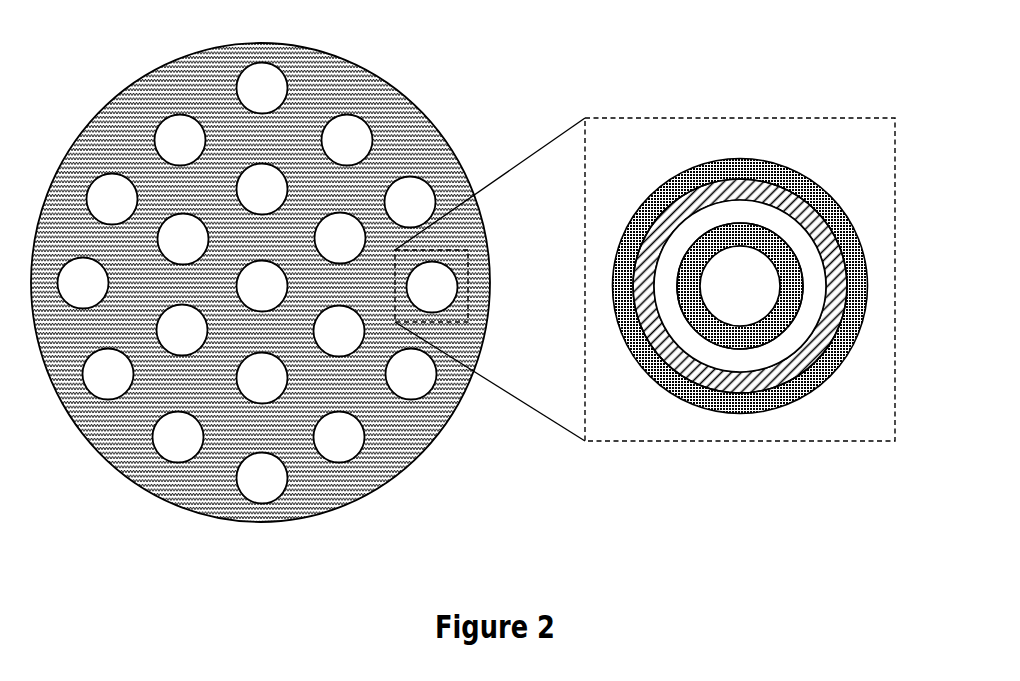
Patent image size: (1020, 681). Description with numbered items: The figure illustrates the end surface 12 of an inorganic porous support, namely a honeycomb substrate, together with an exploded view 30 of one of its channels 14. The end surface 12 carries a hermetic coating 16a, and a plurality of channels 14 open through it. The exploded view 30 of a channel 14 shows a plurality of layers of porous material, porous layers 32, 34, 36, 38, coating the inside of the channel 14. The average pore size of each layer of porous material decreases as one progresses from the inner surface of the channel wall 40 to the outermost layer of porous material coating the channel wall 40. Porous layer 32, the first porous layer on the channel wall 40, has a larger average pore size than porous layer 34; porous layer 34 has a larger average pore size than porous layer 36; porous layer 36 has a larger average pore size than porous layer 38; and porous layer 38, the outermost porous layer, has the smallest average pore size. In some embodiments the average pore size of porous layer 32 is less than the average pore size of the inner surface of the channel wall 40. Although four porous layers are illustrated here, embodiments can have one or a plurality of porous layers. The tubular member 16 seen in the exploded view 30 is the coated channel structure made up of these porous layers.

The end surface 12 is at (260, 300).
The channel 14 is at (260, 482).
The tubular member 16 is at (700, 362).
The hermetic coating 16a is at (260, 321).
The exploded view 30 is at (714, 291).
The porous layer 32 is at (628, 320).
The porous layer 34 is at (684, 366).
The porous layer 36 is at (742, 363).
The porous layer 38 is at (792, 316).
The channel wall 40 is at (332, 421).